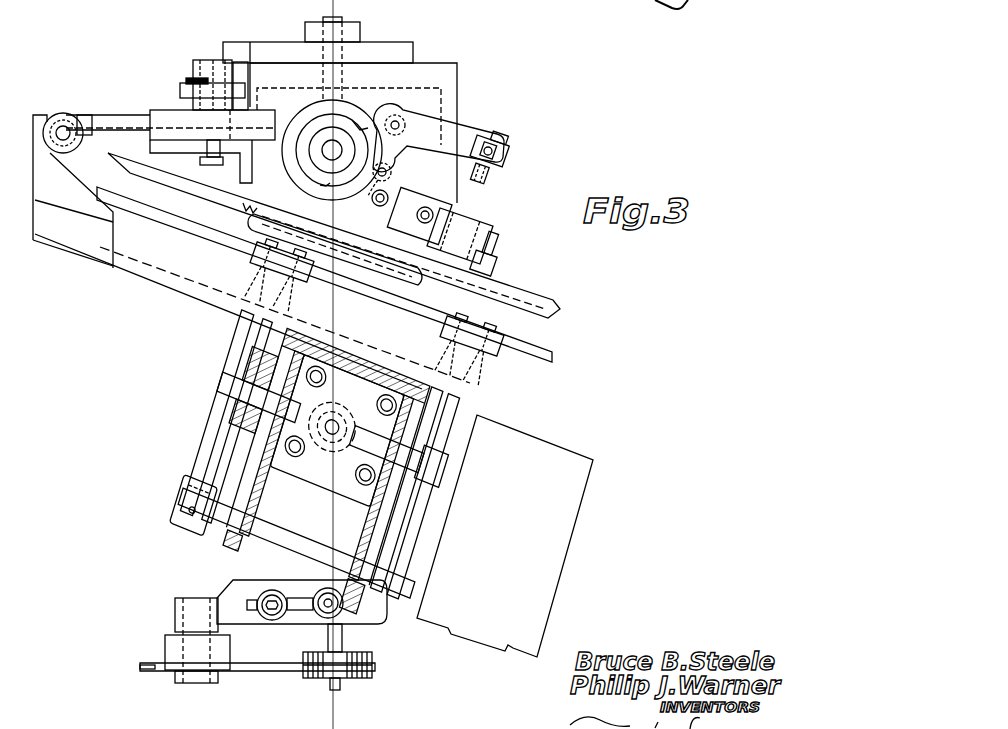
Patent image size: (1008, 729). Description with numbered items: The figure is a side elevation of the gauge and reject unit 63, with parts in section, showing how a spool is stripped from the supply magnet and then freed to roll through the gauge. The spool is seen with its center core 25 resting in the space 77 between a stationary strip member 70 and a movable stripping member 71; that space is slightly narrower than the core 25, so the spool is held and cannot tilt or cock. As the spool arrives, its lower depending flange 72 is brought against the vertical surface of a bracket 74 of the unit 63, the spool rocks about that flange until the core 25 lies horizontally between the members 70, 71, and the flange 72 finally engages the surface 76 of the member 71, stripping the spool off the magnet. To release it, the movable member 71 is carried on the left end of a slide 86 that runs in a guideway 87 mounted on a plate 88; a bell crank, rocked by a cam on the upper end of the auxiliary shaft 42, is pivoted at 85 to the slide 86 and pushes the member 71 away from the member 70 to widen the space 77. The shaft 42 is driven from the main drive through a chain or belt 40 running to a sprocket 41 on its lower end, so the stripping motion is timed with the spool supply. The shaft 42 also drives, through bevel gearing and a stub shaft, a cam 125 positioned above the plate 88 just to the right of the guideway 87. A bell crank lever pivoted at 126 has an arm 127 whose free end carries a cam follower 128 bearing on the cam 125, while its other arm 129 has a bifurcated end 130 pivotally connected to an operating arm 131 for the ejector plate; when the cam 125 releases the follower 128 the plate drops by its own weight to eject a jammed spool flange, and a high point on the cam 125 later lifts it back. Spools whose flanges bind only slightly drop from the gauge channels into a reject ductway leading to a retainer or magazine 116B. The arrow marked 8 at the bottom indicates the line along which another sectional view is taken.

The dimension reference 8 is at (337, 700).
The center core 25 is at (62, 126).
The chain or belt 40 is at (285, 672).
The sprocket 41 is at (170, 668).
The auxiliary shaft 42 is at (325, 513).
The gauge and reject unit 63 is at (438, 61).
The stationary stripping member 70 is at (40, 127).
The movable stripping member 71 is at (88, 113).
The lower spool flange 72 is at (58, 0).
The bracket 74 is at (143, 277).
The surface of movable stripping member 76 is at (112, 0).
The space between stripping members 77 is at (68, 114).
The pivot 85 is at (200, 0).
The slide 86 is at (125, 122).
The guideway 87 is at (170, 118).
The plate 88 is at (253, 207).
The retainer or magazine 116B is at (516, 539).
The cam 125 is at (360, 118).
The pivot 126 is at (407, 132).
The bell crank arm 127 is at (390, 150).
The cam follower 128 is at (365, 198).
The bell crank arm 129 is at (437, 128).
The bifurcated end 130 is at (500, 133).
The operating arm 131 is at (493, 175).